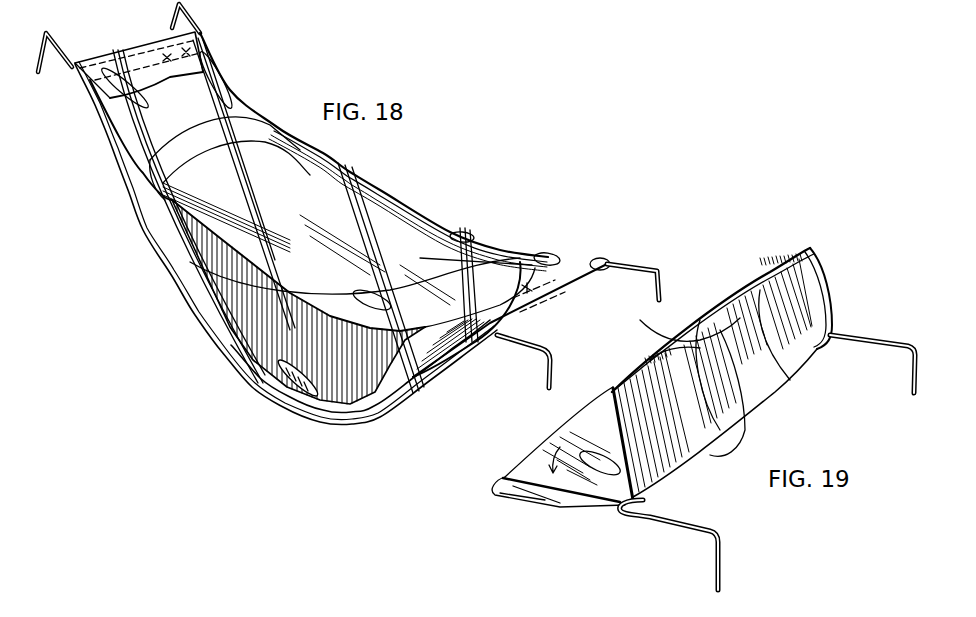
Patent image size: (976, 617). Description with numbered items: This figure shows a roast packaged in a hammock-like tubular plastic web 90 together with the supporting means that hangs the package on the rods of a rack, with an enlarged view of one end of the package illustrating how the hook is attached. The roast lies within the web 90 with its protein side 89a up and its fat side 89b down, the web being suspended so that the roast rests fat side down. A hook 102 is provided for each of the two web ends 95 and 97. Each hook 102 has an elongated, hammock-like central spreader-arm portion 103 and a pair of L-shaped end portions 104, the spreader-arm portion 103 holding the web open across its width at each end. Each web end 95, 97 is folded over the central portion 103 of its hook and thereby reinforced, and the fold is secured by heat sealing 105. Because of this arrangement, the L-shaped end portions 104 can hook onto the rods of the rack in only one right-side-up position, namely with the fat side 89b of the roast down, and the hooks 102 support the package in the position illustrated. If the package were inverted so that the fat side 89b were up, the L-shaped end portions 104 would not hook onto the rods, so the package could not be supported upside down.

In FIG. 18, the protein side 89a is at (362, 182).
In FIG. 18, the fat side 89b is at (283, 380).
In FIG. 18, the tubular web 90 is at (125, 163).
In FIG. 18, the web end 95 is at (213, 67).
In FIG. 18, the web end 97 is at (536, 255).
In FIG. 19, the web end 97 is at (813, 277).
In FIG. 18, the hook 102 is at (644, 265).
In FIG. 19, the spreader-arm portion 103 is at (595, 508).
In FIG. 19, the L-shaped end portions 104 is at (880, 337).
In FIG. 18, the heat sealing 105 is at (140, 63).